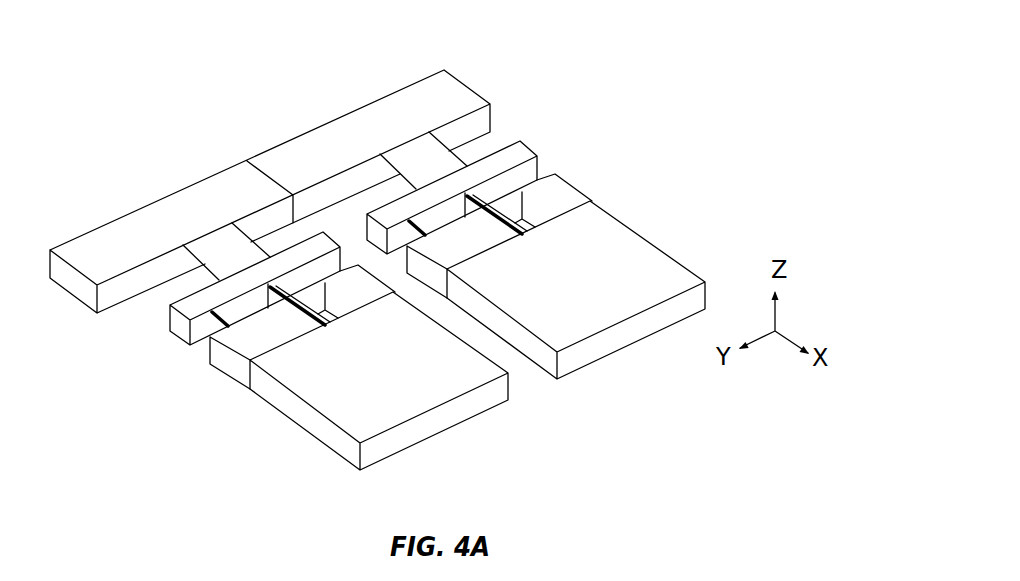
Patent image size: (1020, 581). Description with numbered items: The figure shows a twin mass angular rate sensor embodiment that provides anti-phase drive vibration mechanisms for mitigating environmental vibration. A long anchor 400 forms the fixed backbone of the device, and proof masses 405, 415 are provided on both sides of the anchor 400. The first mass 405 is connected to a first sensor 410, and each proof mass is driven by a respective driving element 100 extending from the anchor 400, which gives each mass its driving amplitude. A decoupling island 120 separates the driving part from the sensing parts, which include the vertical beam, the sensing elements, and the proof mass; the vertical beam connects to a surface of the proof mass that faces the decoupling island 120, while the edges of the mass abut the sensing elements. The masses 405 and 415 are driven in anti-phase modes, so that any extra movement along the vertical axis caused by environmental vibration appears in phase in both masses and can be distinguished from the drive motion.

The anchor 400 is at (473, 83).
The driving element 100 is at (244, 261).
The decoupling island 120 is at (168, 332).
The first sensor 410 is at (211, 338).
The first mass 405 is at (590, 291).
The second mass 415 is at (388, 369).